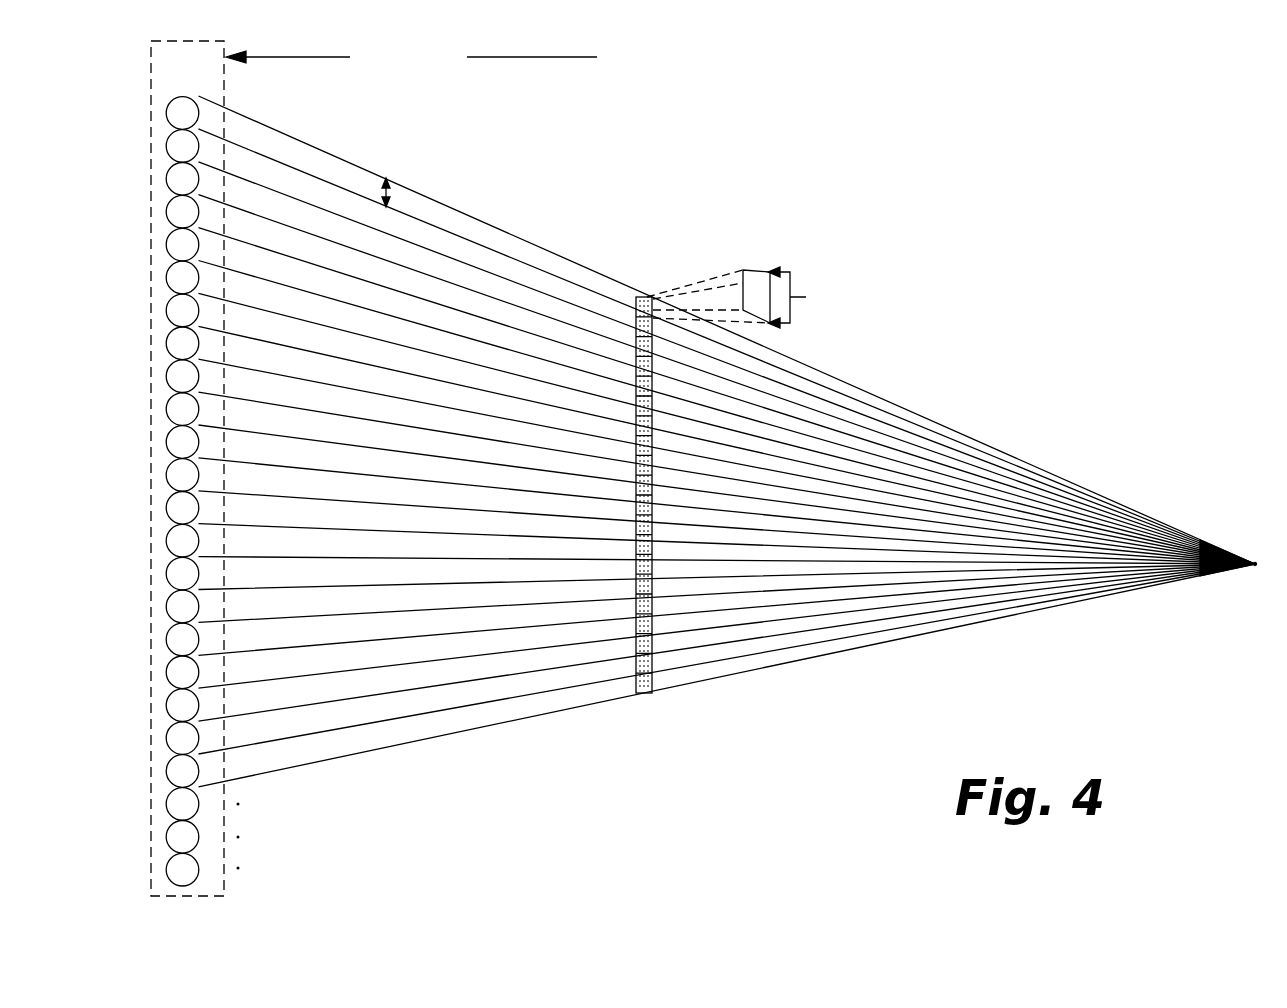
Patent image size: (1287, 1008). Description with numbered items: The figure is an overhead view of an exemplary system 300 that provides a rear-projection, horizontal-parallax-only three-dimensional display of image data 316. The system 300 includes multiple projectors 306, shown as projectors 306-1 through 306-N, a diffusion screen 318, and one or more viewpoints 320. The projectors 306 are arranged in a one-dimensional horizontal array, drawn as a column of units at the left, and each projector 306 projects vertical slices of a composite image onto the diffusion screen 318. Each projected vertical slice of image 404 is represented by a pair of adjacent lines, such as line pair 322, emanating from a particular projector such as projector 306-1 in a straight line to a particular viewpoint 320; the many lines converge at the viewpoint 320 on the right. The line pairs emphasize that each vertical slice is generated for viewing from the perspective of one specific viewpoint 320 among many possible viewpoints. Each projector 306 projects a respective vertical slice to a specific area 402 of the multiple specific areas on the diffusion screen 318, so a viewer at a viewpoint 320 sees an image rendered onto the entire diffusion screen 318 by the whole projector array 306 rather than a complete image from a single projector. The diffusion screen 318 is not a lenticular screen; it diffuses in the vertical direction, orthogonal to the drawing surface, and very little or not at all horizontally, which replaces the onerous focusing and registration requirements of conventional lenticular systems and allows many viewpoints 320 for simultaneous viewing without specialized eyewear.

The system 300 is at (1026, 112).
The projectors 306 is at (207, 70).
The projector 306-1 is at (188, 116).
The projector 306-N is at (185, 866).
The image data 316 is at (429, 81).
The diffusion screen 318 is at (651, 693).
The viewpoint 320 is at (1259, 564).
The line pair 322 is at (558, 277).
The specific area 402 is at (850, 335).
The projected vertical slice of image 404 is at (393, 190).